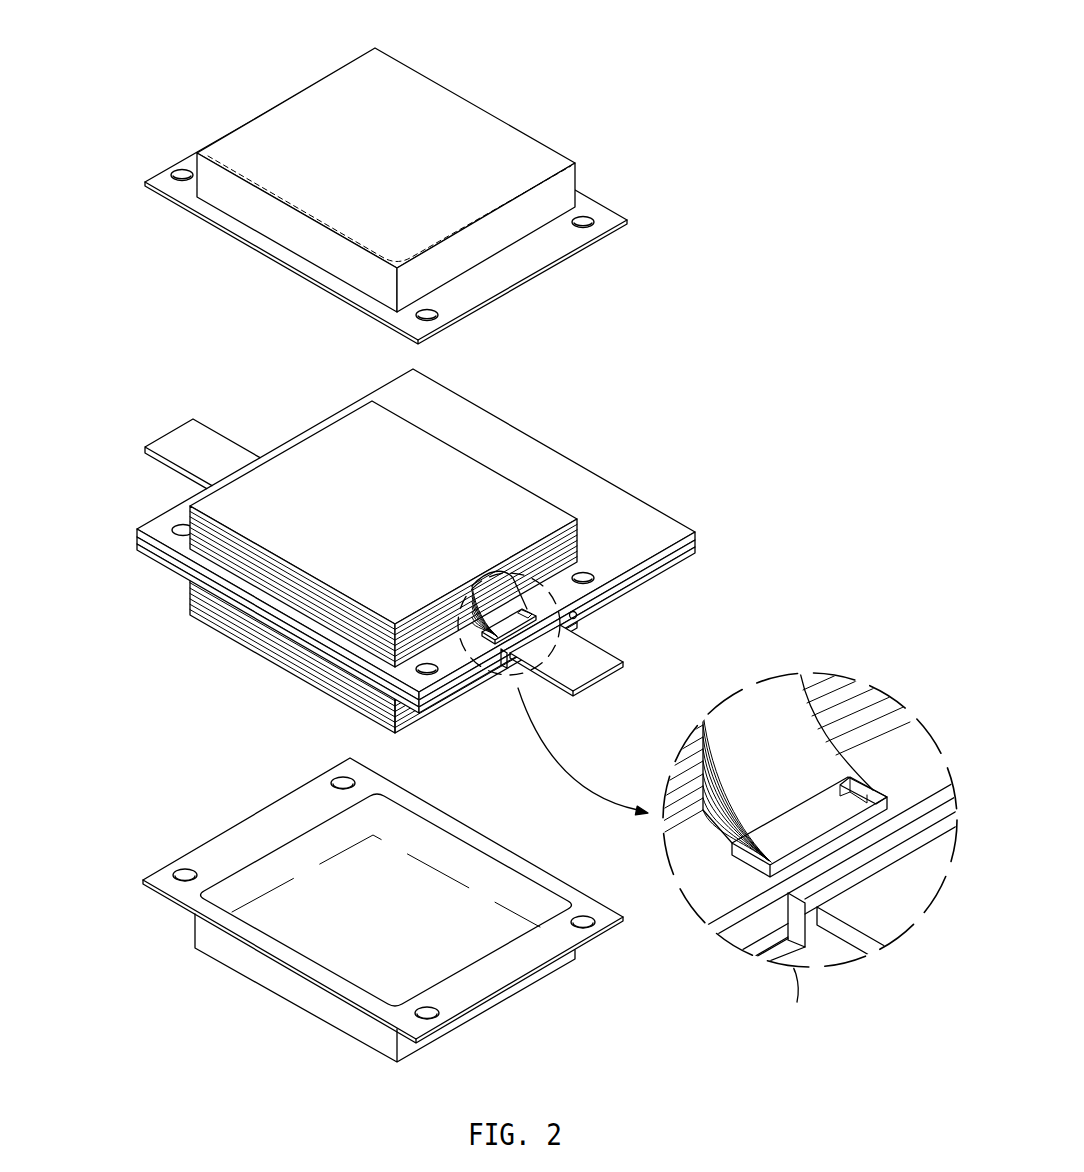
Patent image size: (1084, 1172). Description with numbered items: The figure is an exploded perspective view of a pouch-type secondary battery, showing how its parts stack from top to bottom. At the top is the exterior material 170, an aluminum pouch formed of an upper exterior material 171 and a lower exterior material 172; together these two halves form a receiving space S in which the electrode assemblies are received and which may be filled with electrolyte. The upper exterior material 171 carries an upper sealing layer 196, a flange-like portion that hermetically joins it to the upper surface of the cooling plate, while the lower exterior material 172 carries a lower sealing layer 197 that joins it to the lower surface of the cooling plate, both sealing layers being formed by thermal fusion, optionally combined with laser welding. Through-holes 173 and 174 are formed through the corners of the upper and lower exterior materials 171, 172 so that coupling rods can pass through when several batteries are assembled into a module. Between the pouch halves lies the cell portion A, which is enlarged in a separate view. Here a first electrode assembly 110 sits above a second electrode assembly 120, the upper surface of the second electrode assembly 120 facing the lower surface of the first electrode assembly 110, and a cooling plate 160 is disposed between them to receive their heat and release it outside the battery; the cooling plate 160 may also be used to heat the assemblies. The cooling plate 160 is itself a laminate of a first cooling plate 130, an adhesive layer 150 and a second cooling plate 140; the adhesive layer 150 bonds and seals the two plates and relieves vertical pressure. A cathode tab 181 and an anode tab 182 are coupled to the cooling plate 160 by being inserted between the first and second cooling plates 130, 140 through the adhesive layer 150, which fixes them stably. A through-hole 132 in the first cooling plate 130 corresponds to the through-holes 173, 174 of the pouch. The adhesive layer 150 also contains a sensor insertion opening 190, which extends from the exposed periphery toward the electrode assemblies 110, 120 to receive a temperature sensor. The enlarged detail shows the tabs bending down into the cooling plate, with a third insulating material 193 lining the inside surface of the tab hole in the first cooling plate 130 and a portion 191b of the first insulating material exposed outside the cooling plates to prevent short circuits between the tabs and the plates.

The first electrode assembly 110 is at (206, 560).
The second electrode assembly 120 is at (211, 635).
The first cooling plate 130 is at (693, 529).
The through-hole 132 is at (583, 571).
The second cooling plate 140 is at (696, 554).
The adhesive layer 150 is at (696, 546).
The cooling plate 160 is at (487, 541).
The exterior material 170 is at (386, 175).
The upper exterior material 171 is at (282, 227).
The lower exterior material 172 is at (409, 917).
The through-hole 173 is at (585, 217).
The through-hole 174 is at (592, 923).
The cathode tab 181 is at (599, 670).
The anode tab 182 is at (200, 453).
The sensor insertion opening 190 is at (601, 613).
The portion of first insulating material exposed outside the cooling plates 191b is at (795, 932).
The third insulating material 193 is at (869, 794).
The upper sealing layer 196 is at (310, 272).
The lower sealing layer 197 is at (225, 915).
The portion A is at (440, 551).
The receiving space S is at (393, 932).